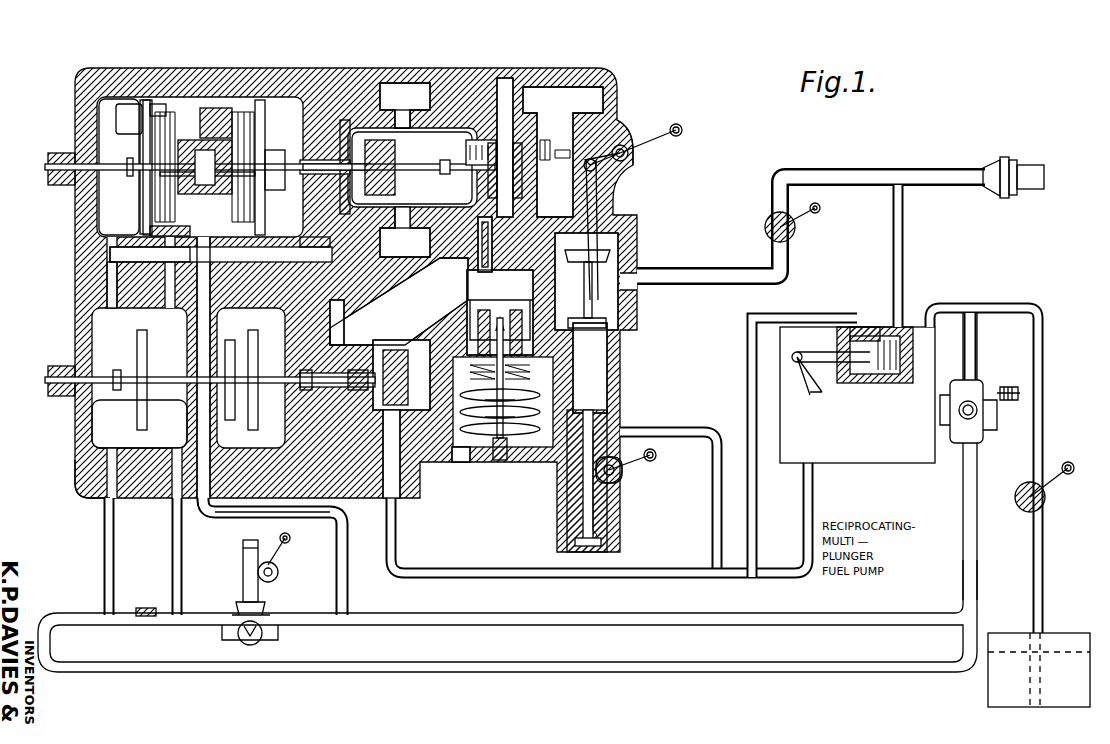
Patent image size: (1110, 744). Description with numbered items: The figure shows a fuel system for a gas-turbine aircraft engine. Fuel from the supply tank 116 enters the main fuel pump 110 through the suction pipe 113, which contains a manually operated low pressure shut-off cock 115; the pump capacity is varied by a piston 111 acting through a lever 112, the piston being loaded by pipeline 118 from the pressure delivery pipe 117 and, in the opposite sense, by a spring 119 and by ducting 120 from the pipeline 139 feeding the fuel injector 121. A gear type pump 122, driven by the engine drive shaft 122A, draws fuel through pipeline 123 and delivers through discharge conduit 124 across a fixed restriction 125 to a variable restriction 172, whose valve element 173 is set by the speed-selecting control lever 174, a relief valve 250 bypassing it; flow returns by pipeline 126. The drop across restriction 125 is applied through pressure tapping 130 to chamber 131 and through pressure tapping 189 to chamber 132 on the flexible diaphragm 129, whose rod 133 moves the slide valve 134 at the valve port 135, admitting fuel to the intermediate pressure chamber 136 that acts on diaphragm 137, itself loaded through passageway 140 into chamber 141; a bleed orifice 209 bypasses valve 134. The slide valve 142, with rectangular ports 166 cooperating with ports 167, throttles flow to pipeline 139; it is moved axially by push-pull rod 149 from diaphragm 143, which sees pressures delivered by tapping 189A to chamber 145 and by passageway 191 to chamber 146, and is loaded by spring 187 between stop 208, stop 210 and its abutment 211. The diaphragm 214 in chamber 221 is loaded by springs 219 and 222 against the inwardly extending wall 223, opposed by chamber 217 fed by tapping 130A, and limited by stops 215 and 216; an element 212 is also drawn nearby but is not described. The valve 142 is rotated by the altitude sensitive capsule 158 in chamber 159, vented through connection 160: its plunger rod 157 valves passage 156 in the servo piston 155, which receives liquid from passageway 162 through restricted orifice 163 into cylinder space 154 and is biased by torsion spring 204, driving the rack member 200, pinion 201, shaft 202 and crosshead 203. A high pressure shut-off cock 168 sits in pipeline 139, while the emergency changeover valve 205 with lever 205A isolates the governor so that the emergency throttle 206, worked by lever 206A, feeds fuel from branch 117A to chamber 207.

The main fuel pump 110 is at (872, 463).
The piston 111 is at (878, 325).
The lever 112 is at (807, 390).
The suction pipe 113 is at (930, 313).
The low pressure shut-off cock 115 is at (1022, 507).
The fuel supply tank 116 is at (988, 690).
The fuel pump pressure delivery pipe 117 is at (396, 510).
The branch 117A is at (652, 455).
The pipeline 118 is at (750, 405).
The spring 119 is at (888, 385).
The ducting 120 is at (904, 240).
The fuel injector 121 is at (1022, 190).
The gear type pump 122 is at (985, 442).
The engine drive shaft 122A is at (1008, 385).
The pipeline 123 is at (975, 330).
The discharge conduit 124 is at (800, 660).
The fixed restriction 125 is at (146, 610).
The pipeline 126 is at (580, 626).
The flexible diaphragm 129 is at (95, 470).
The pressure tapping 130 is at (104, 517).
The pressure tapping 130A is at (112, 280).
The chamber 131 is at (100, 400).
The chamber 132 is at (150, 430).
The rod 133 is at (185, 378).
The slide valve 134 is at (345, 385).
The valve port 135 is at (400, 340).
The intermediate pressure chamber 136 is at (268, 560).
The diaphragm 137 is at (215, 510).
The pipeline 139 is at (398, 100).
The passageway 140 is at (312, 245).
The chamber 141 is at (230, 415).
The slide valve 142 is at (360, 150).
The diaphragm 143 is at (236, 150).
The chamber 145 is at (258, 360).
The chamber 146 is at (345, 130).
The push-pull rod 149 is at (284, 172).
The cylinder space 154 is at (620, 300).
The servo piston 155 is at (492, 270).
The passage 156 is at (492, 232).
The plunger rod 157 is at (495, 360).
The altitude sensitive capsule 158 is at (530, 440).
The chamber 159 is at (490, 440).
The connection 160 is at (461, 462).
The passageway 162 is at (440, 340).
The restricted orifice 163 is at (500, 330).
The ports 166 is at (420, 90).
The ports 167 is at (375, 120).
The high pressure shut-off cock 168 is at (796, 232).
The variable restriction 172 is at (262, 608).
The valve element 173 is at (244, 575).
The control lever 174 is at (275, 555).
The spring 187 is at (245, 108).
The pressure tapping 189 is at (172, 527).
The pressure tapping 189A is at (180, 254).
The passageway 191 is at (210, 360).
The sliding rack member 200 is at (512, 110).
The pinion 201 is at (500, 110).
The shaft 202 is at (620, 120).
The crosshead 203 is at (480, 140).
The torsion spring 204 is at (580, 110).
The emergency changeover valve 205 is at (597, 190).
The control lever 205A is at (655, 130).
The emergency manual fuel throttle 206 is at (610, 440).
The lever 206A is at (630, 480).
The chamber 207 is at (608, 380).
The stop 208 is at (262, 105).
The bleed orifice 209 is at (299, 529).
The stop 210 is at (215, 160).
The abutment 211 is at (200, 176).
The disc 212 is at (150, 145).
The diaphragm 214 is at (160, 110).
The selectively adjustable stop 215 is at (110, 168).
The adjustable stop 216 is at (150, 236).
The chamber 217 is at (120, 110).
The spring 219 is at (148, 100).
The chamber 221 is at (110, 118).
The spring 222 is at (180, 110).
The inwardly extending wall 223 is at (205, 110).
The relief valve 250 is at (262, 636).